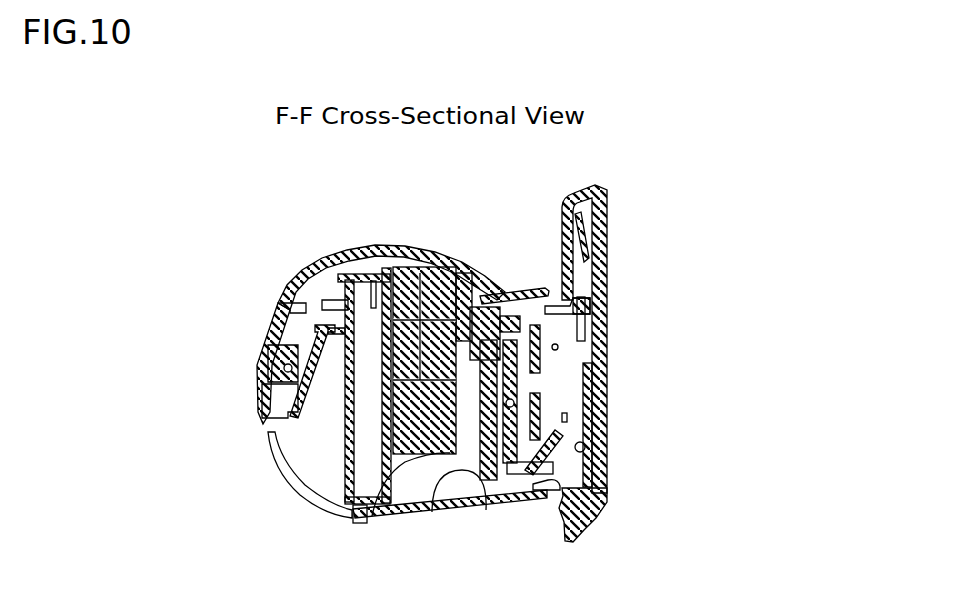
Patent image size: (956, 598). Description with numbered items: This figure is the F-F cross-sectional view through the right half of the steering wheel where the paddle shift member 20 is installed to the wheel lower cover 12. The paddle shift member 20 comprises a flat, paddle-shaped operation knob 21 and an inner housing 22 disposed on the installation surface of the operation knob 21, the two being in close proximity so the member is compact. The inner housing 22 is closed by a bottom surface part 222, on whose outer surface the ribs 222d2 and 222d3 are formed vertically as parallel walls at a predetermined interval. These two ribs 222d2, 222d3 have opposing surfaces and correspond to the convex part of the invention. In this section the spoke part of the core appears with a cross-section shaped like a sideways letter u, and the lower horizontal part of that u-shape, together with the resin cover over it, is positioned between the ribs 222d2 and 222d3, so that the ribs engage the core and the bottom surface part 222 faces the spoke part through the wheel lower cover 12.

The paddle shift member 20 is at (625, 176).
The operation knob 21 is at (607, 262).
The inner housing 22 is at (533, 498).
The wheel lower cover 12 is at (481, 262).
The bottom surface part 222 is at (477, 504).
The rib 222d2 is at (381, 482).
The rib 222d3 is at (438, 472).